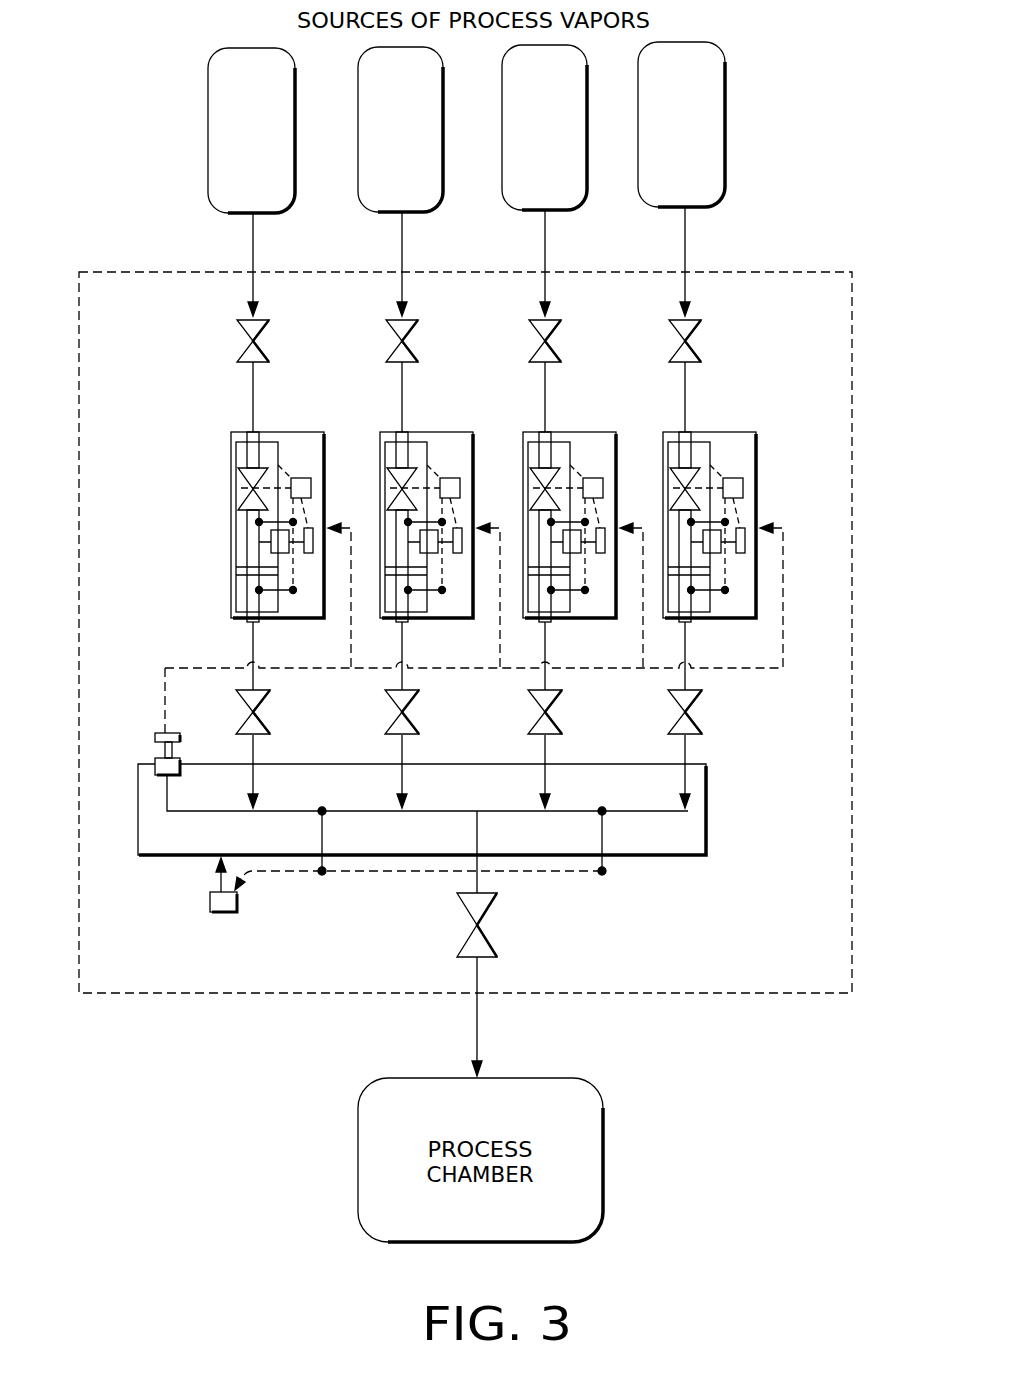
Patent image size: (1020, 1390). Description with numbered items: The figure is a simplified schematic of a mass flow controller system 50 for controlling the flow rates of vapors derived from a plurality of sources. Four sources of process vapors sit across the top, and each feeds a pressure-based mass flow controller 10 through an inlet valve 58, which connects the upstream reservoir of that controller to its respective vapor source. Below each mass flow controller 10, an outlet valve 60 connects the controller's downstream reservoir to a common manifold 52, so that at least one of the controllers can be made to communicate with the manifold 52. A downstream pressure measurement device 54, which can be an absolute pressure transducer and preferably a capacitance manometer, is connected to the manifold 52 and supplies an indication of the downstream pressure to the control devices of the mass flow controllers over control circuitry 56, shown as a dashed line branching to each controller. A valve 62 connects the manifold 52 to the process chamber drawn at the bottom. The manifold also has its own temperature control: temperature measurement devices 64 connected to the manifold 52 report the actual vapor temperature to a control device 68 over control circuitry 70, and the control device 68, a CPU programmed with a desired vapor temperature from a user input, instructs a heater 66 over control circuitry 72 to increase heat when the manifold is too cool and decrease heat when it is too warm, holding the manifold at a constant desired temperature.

The mass flow controller 10 is at (231, 446).
The mass flow controller system 50 is at (864, 334).
The manifold 52 is at (657, 824).
The downstream pressure measurement device 54 is at (154, 760).
The control circuitry 56 is at (166, 668).
The inlet valve 58 is at (259, 339).
The outlet valve 60 is at (261, 718).
The valve 62 is at (490, 937).
The temperature measurement device 64 is at (323, 838).
The heater 66 is at (138, 858).
The control device 68 is at (226, 912).
The control circuitry 70 is at (294, 876).
The control circuitry 72 is at (218, 882).